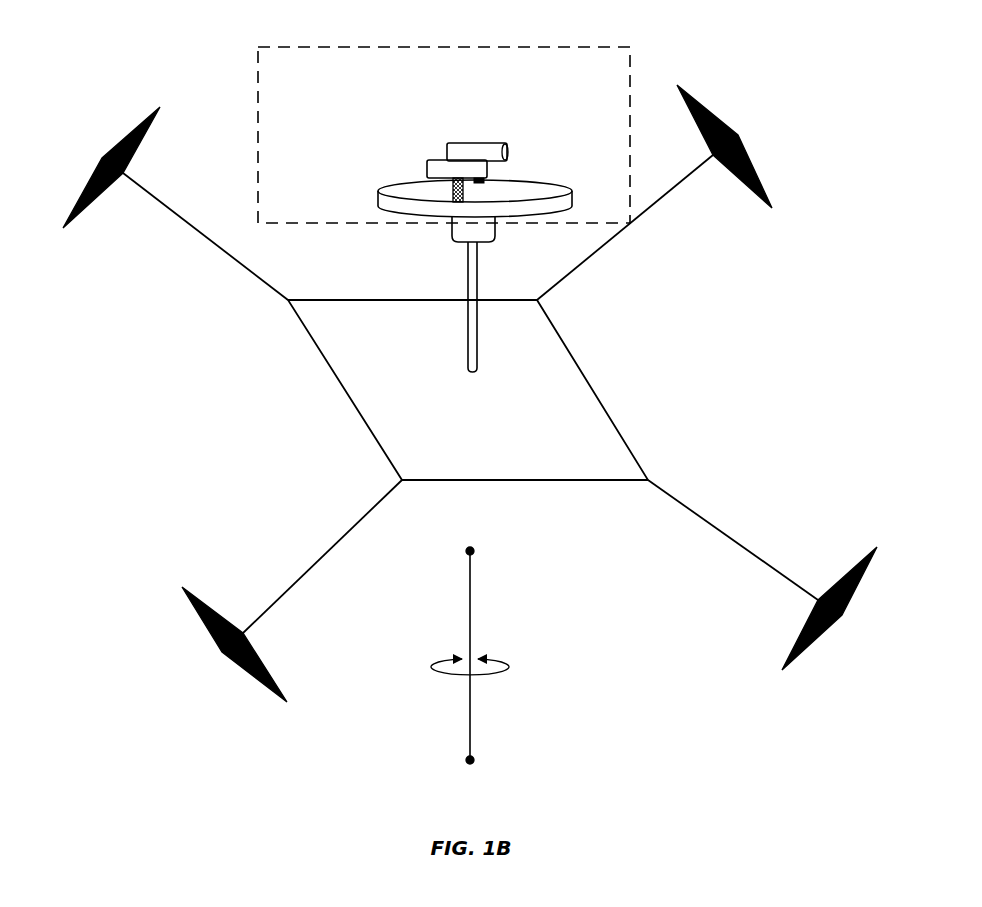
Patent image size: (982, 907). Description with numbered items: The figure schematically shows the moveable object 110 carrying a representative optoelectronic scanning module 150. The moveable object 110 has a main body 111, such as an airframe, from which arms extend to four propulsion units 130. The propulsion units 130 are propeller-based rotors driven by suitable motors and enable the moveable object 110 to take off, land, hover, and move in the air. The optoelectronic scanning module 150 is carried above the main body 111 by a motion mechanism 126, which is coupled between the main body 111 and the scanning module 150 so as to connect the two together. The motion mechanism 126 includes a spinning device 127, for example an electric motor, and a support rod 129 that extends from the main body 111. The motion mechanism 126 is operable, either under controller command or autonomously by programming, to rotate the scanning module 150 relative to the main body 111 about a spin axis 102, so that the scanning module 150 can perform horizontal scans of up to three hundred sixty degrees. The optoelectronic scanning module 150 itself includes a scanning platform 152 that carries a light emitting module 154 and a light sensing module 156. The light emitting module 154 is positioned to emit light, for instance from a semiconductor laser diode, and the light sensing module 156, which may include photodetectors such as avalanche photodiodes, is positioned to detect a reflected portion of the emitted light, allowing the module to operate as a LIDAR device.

The spin axis 102 is at (471, 600).
The moveable object 110 is at (298, 397).
The main body 111 is at (525, 461).
The motion mechanism 126 is at (458, 254).
The spinning device 127 is at (478, 232).
The support rod 129 is at (478, 300).
The propulsion units 130 is at (124, 108).
The optoelectronic scanning module 150 is at (342, 46).
The scanning platform 152 is at (398, 204).
The light emitting module 154 is at (481, 148).
The light sensing module 156 is at (432, 172).